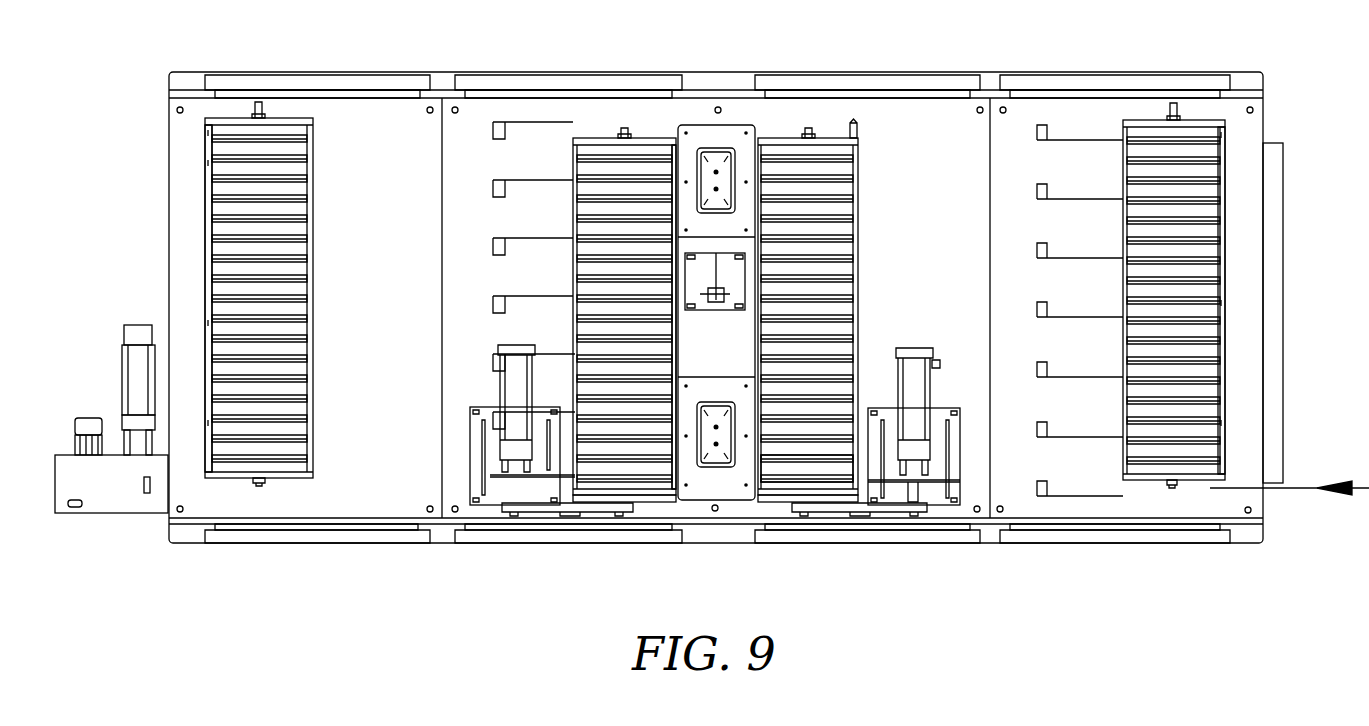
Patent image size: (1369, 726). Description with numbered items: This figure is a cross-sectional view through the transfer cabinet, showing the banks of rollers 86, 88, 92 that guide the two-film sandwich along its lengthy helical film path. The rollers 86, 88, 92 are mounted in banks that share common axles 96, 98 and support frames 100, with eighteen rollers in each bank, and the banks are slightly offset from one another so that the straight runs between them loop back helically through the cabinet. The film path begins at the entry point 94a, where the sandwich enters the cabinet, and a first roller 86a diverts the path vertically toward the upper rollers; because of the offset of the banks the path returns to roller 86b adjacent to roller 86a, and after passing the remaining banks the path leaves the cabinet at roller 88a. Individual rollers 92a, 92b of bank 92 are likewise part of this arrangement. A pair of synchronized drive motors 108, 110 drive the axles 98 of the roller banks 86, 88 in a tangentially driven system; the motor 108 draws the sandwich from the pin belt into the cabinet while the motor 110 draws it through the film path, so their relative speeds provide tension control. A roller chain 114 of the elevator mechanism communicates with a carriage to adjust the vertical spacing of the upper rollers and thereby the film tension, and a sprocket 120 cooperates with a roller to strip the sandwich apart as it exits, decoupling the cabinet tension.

The rollers 86 is at (845, 349).
The first roller 86a is at (887, 517).
The roller 86b is at (780, 468).
The rollers 88 is at (616, 304).
The roller 88a is at (642, 487).
The rollers 92 is at (720, 261).
The roller 92a is at (1132, 130).
The roller 92b is at (285, 128).
The entry point of film path 94a is at (1265, 490).
The common axles 96 is at (252, 100).
The common axles 98 is at (626, 128).
The support frames 100 is at (207, 145).
The drive motor 108 is at (940, 468).
The drive motor 110 is at (500, 458).
The roller chain 114 is at (715, 312).
The sprocket 120 is at (545, 510).